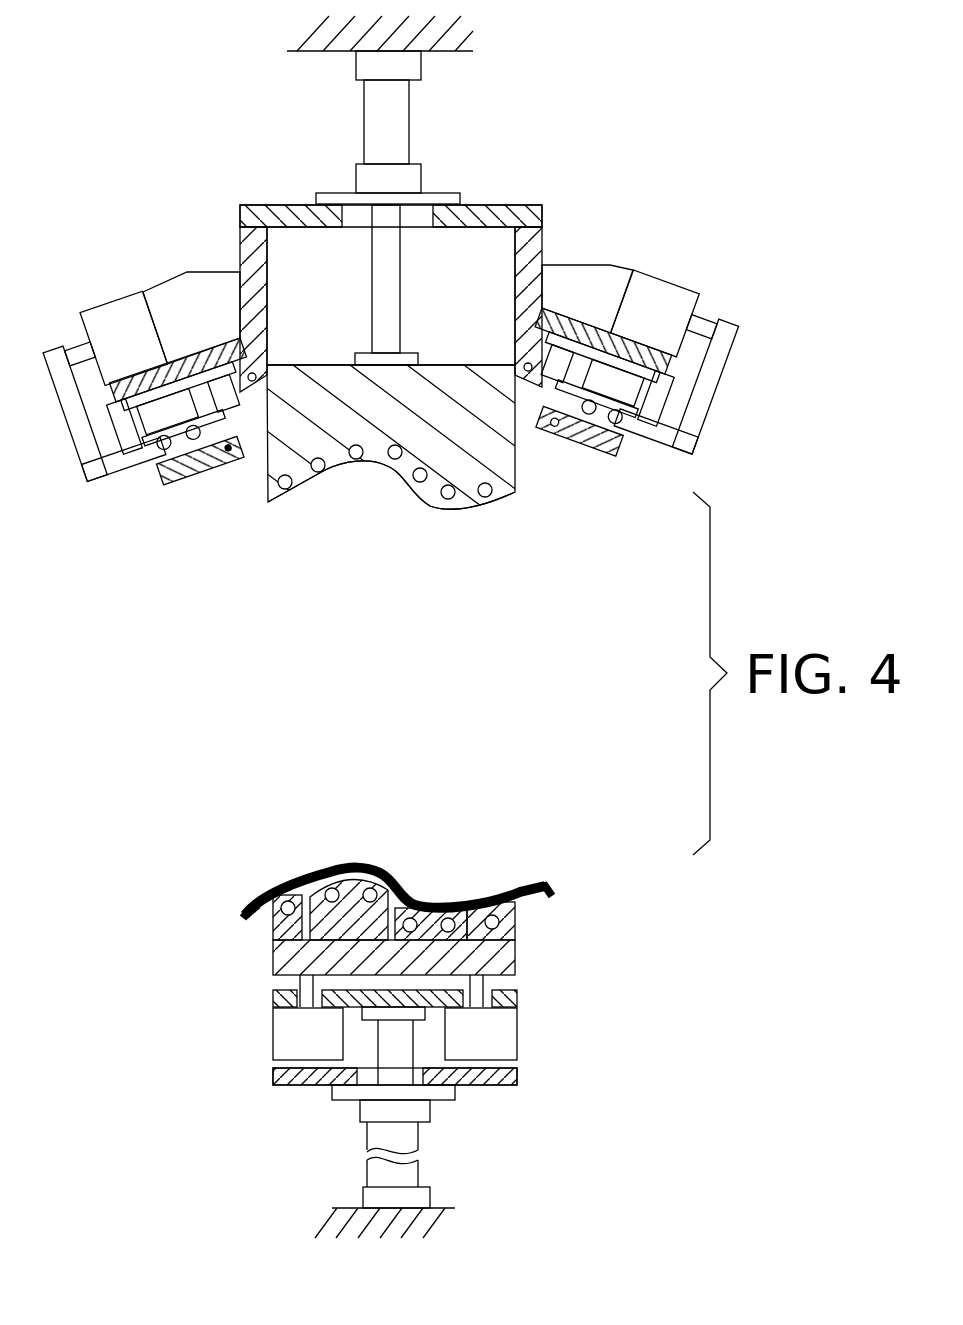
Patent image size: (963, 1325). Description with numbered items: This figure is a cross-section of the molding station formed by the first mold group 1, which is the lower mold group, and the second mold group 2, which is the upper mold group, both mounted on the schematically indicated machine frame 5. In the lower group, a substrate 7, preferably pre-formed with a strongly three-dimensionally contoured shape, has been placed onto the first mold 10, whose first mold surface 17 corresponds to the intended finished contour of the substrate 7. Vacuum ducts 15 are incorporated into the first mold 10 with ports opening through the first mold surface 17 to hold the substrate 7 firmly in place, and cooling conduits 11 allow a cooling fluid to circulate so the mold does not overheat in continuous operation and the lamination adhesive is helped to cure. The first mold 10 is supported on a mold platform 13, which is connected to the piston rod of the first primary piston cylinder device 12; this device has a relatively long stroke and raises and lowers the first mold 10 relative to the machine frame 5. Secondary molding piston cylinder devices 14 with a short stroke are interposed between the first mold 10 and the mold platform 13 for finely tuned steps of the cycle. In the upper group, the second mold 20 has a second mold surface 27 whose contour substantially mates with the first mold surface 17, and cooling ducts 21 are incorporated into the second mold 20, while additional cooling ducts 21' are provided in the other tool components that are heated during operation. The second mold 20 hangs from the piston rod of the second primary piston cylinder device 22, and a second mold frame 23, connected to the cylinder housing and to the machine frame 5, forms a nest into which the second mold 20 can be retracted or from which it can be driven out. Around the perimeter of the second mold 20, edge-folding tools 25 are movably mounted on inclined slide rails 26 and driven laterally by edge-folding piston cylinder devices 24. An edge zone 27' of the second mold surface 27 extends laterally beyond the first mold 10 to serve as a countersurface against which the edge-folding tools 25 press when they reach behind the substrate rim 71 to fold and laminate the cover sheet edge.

The first mold group 1 is at (294, 849).
The second mold group 2 is at (312, 612).
The machine frame 5 is at (313, 50).
The substrate 7 is at (400, 880).
The first mold 10 is at (520, 945).
The cooling conduits 11 is at (500, 922).
The first primary piston cylinder device 12 is at (435, 1105).
The mold platform 13 is at (520, 992).
The secondary molding piston cylinder devices 14 is at (287, 1038).
The vacuum ducts 15 is at (278, 943).
The first mold surface 17 is at (268, 915).
The second mold 20 is at (518, 490).
The cooling ducts 21 is at (385, 519).
The additional cooling ducts 21' is at (356, 482).
The second primary piston cylinder device 22 is at (407, 178).
The second mold frame 23 is at (530, 285).
The edge-folding piston cylinder devices 24 is at (665, 307).
The edge-folding tools 25 is at (592, 450).
The slide rails 26 is at (655, 385).
The second mold surface 27 is at (326, 531).
The edge zone 27' is at (478, 560).
The substrate rim 71 is at (553, 892).